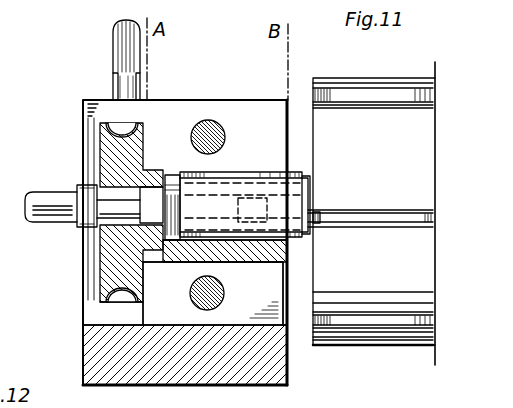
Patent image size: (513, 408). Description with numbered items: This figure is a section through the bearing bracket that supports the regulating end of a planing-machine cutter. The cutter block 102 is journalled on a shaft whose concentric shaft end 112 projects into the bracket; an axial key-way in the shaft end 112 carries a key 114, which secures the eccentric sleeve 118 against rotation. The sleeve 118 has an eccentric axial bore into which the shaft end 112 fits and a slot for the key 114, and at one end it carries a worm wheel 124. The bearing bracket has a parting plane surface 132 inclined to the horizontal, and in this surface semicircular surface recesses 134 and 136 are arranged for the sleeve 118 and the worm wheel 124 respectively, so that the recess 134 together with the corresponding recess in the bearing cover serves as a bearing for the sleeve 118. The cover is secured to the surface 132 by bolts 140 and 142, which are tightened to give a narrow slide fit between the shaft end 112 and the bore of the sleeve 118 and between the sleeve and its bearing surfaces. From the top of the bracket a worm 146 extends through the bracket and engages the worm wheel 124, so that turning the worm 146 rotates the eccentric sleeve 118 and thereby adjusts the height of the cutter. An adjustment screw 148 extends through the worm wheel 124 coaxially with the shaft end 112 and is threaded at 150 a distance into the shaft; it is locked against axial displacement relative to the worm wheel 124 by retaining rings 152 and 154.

The cutter block 102 is at (420, 175).
The shaft end 112 is at (296, 218).
The key 114 is at (303, 178).
The eccentric sleeve 118 is at (237, 253).
The worm wheel 124 is at (103, 268).
The parting plane surface 132 is at (258, 112).
The surface recess 134 is at (210, 172).
The surface recess 136 is at (127, 302).
The bolt 140 is at (203, 120).
The bolt 142 is at (190, 290).
The worm 146 is at (118, 88).
The adjustment screw 148 is at (100, 205).
The thread 150 is at (240, 203).
The retaining ring 152 is at (88, 195).
The retaining ring 154 is at (152, 200).